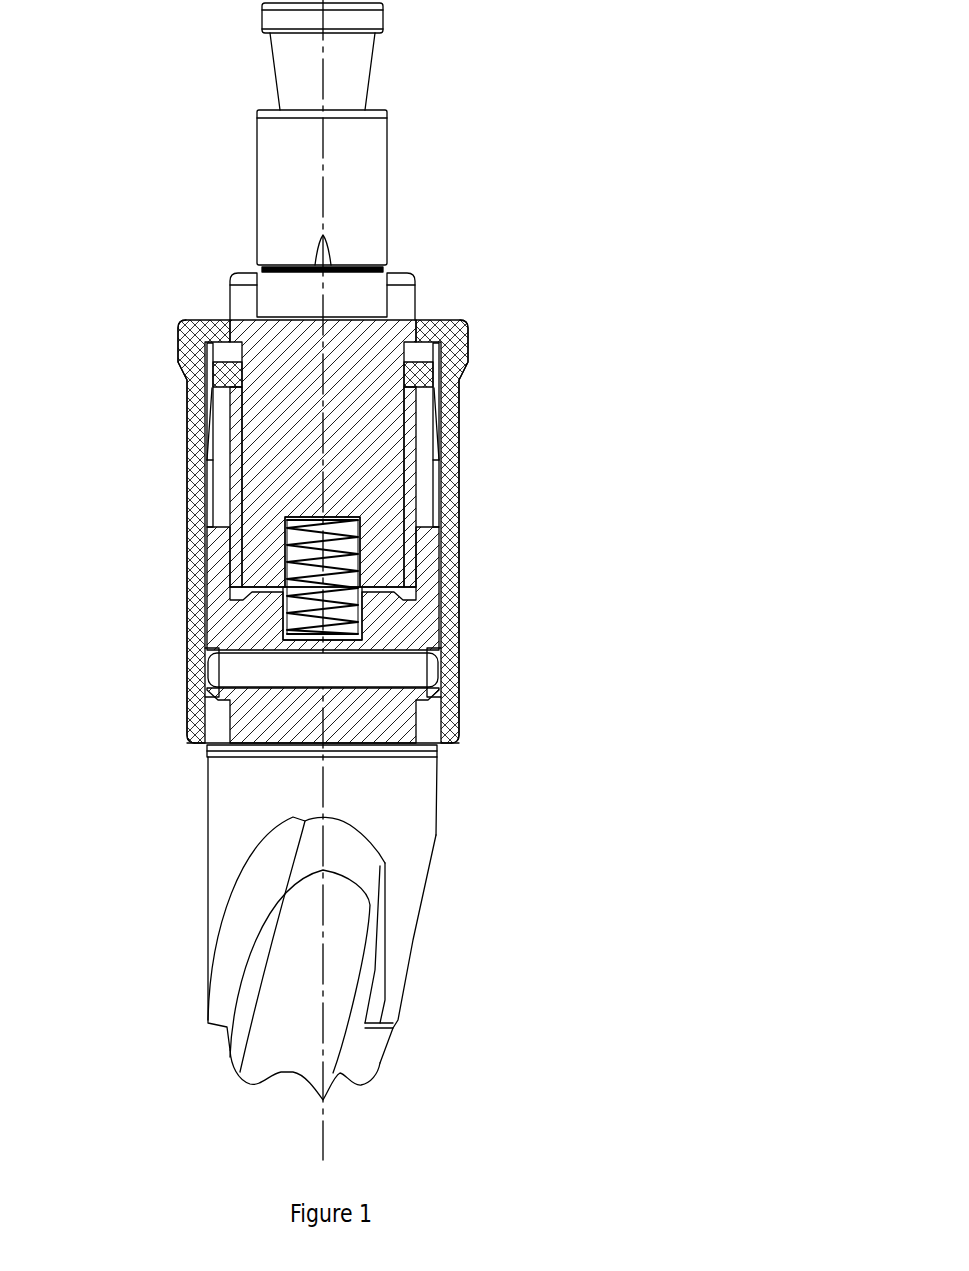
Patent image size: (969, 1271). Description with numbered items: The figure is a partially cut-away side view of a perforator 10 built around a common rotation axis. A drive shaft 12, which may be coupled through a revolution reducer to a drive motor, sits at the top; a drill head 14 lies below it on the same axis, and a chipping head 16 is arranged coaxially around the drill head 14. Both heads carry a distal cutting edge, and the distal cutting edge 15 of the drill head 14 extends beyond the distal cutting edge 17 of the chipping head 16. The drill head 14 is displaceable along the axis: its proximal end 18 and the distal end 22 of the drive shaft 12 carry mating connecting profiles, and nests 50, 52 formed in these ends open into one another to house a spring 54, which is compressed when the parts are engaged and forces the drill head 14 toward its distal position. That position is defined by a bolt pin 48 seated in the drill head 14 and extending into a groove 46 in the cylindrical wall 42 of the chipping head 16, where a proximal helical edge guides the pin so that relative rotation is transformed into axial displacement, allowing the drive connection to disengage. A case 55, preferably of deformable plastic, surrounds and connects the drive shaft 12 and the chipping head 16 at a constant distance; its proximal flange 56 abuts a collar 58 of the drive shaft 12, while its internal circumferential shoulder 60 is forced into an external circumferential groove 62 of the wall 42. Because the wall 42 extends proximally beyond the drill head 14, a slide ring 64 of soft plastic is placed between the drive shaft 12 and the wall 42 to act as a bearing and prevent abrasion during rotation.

The perforator 10 is at (136, 206).
The drive shaft 12 is at (387, 185).
The drill head 14 is at (333, 983).
The distal cutting edge 15 is at (380, 1065).
The chipping head 16 is at (435, 788).
The distal cutting edge 17 is at (425, 902).
The proximal end 18 is at (262, 600).
The distal end 22 is at (240, 574).
The cylindrical wall 42 is at (423, 588).
The groove 46 is at (440, 685).
The bolt pin 48 is at (387, 672).
The nest 50 is at (287, 612).
The nest 52 is at (287, 535).
The spring 54 is at (347, 563).
The case 55 is at (457, 438).
The proximal flange 56 is at (441, 319).
The collar 58 is at (462, 320).
The internal circumferential shoulder 60 is at (210, 462).
The external circumferential groove 62 is at (205, 502).
The slide ring 64 is at (418, 373).